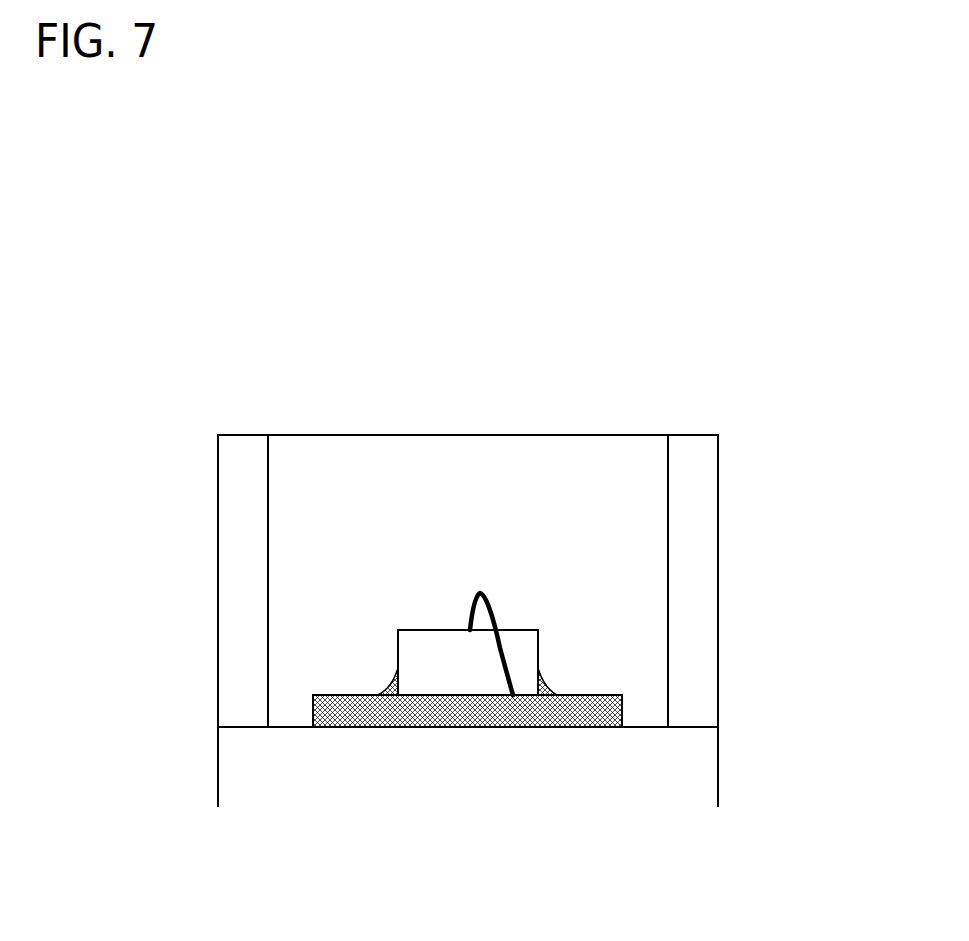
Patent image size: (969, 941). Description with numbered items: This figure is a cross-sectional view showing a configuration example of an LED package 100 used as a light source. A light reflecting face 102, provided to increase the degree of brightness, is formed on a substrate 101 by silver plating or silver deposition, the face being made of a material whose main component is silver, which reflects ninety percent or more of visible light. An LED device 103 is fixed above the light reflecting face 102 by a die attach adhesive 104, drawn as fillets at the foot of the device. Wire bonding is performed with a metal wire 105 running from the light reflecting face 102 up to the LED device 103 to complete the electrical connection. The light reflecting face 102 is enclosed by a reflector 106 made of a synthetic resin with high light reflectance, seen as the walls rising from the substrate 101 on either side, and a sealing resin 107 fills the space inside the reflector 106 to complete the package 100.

The package 100 is at (190, 418).
The substrate 101 is at (218, 772).
The light reflecting face 102 is at (344, 695).
The LED device 103 is at (427, 630).
The die attach adhesive 104 is at (547, 680).
The metal wire 105 is at (483, 590).
The reflector 106 is at (720, 572).
The sealing resin 107 is at (489, 494).